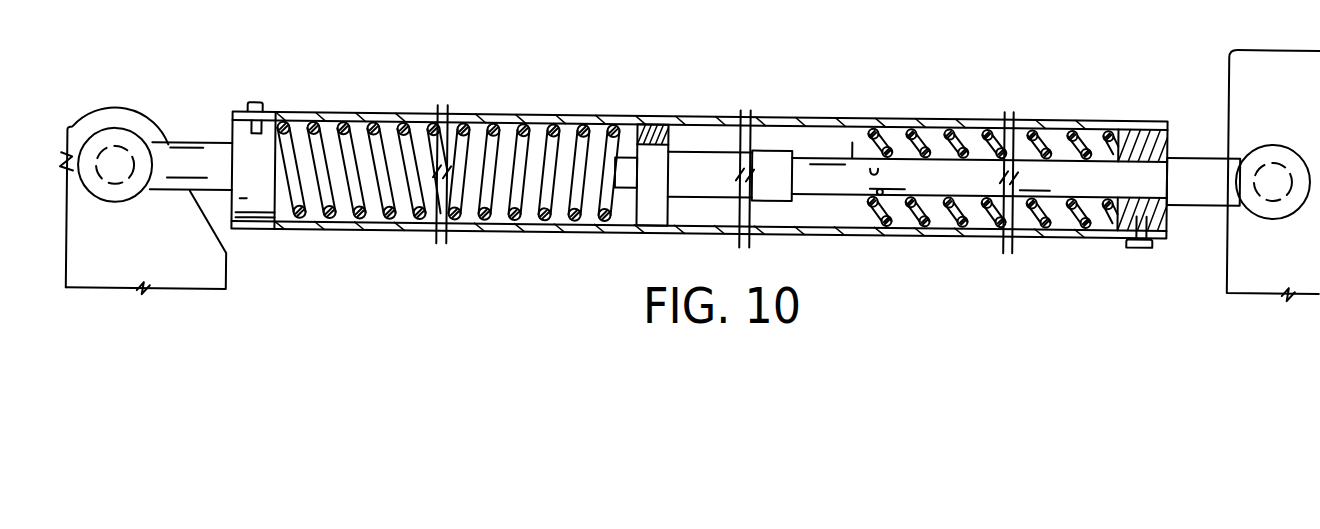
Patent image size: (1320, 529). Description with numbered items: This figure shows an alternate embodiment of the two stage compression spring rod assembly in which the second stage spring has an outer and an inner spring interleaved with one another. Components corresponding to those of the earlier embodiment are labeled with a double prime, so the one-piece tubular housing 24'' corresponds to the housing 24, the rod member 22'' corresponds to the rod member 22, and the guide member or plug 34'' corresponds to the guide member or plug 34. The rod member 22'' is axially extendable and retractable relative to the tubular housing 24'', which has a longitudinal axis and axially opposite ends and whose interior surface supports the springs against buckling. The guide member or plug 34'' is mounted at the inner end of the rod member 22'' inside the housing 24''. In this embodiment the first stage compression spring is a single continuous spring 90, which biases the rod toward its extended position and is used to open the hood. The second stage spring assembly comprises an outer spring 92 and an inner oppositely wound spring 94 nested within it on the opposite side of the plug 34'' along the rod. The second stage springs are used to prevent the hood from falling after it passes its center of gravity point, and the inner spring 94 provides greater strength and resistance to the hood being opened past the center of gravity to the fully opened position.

The tubular housing 24'' is at (699, 145).
The tubular housing 24 is at (699, 145).
The rod member 22'' is at (917, 215).
The rod member 22 is at (917, 215).
The guide member or plug 34'' is at (620, 210).
The guide member or plug 34 is at (620, 210).
The single continuous spring 90 is at (521, 124).
The outer spring 92 is at (957, 127).
The inner oppositely wound spring 94 is at (948, 218).